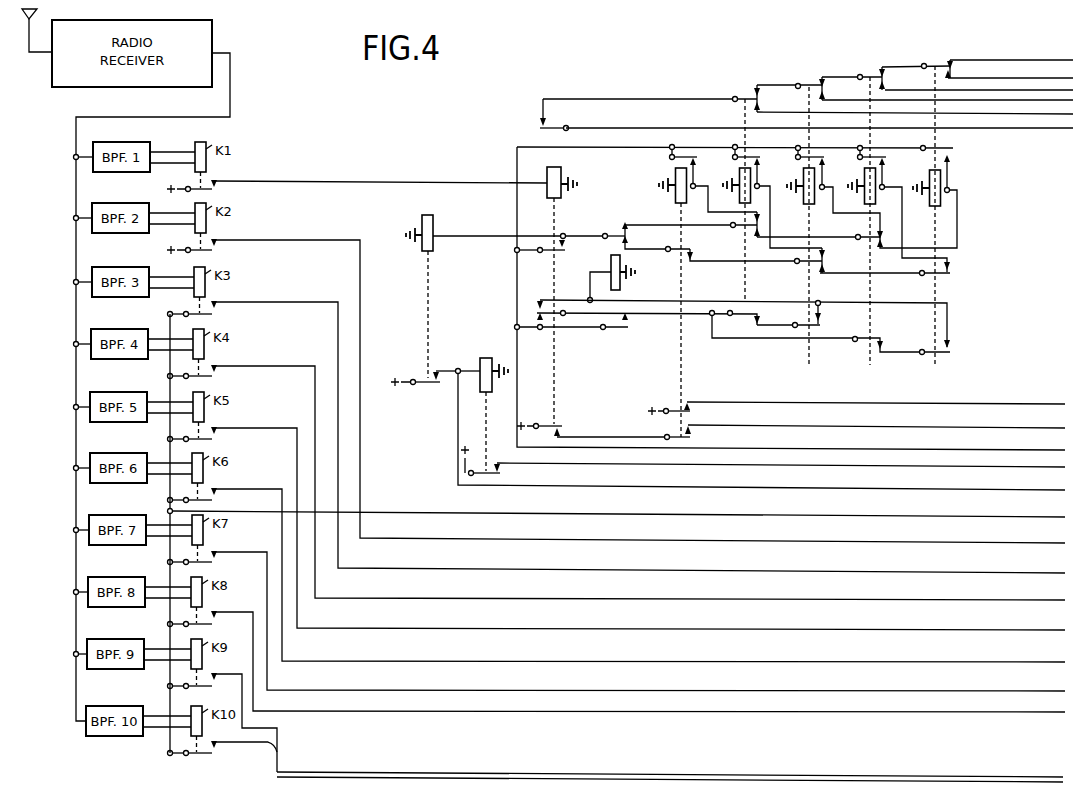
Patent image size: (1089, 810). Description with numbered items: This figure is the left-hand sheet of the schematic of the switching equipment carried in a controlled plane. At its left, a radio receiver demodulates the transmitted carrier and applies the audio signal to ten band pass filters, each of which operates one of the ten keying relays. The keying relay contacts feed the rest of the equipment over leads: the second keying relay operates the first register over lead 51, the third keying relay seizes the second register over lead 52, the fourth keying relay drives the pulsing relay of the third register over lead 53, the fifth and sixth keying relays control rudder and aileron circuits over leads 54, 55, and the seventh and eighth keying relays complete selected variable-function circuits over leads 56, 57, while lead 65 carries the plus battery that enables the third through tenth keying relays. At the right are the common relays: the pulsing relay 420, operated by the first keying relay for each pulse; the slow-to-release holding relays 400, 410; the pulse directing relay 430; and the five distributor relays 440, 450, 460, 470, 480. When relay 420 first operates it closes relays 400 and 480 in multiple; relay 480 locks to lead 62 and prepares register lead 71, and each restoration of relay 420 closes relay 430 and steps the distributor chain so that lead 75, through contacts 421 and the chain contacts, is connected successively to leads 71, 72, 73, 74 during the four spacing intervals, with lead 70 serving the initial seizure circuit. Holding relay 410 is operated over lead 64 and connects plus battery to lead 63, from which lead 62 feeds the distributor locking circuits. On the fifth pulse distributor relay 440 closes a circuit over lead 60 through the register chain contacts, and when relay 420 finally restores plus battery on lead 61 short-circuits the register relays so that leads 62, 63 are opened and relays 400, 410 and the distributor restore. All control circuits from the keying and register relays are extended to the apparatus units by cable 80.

The holding relay 400 is at (433, 221).
The holding relay 410 is at (495, 338).
The pulsing relay 420 is at (561, 194).
The contacts of relay 420 421 is at (556, 113).
The pulse directing relay 430 is at (620, 287).
The distributor relay 440 is at (675, 201).
The distributor relay 450 is at (740, 193).
The distributor relay 460 is at (803, 200).
The distributor relay 470 is at (864, 199).
The distributor relay 480 is at (940, 200).
The lead 51 is at (1047, 533).
The lead 52 is at (1047, 562).
The lead 53 is at (1047, 589).
The lead 54 is at (1047, 619).
The lead 55 is at (1047, 651).
The lead 56 is at (1047, 680).
The lead 57 is at (1047, 701).
The lead 60 is at (1047, 393).
The lead 61 is at (1047, 417).
The lead 62 is at (1047, 439).
The lead 63 is at (1047, 456).
The lead 64 is at (1047, 479).
The lead 65 is at (1047, 506).
The lead 70 is at (1062, 48).
The lead 71 is at (1062, 66).
The lead 72 is at (1010, 90).
The lead 73 is at (992, 102).
The lead 74 is at (1021, 116).
The lead 75 is at (1057, 129).
The cable 80 is at (1049, 764).